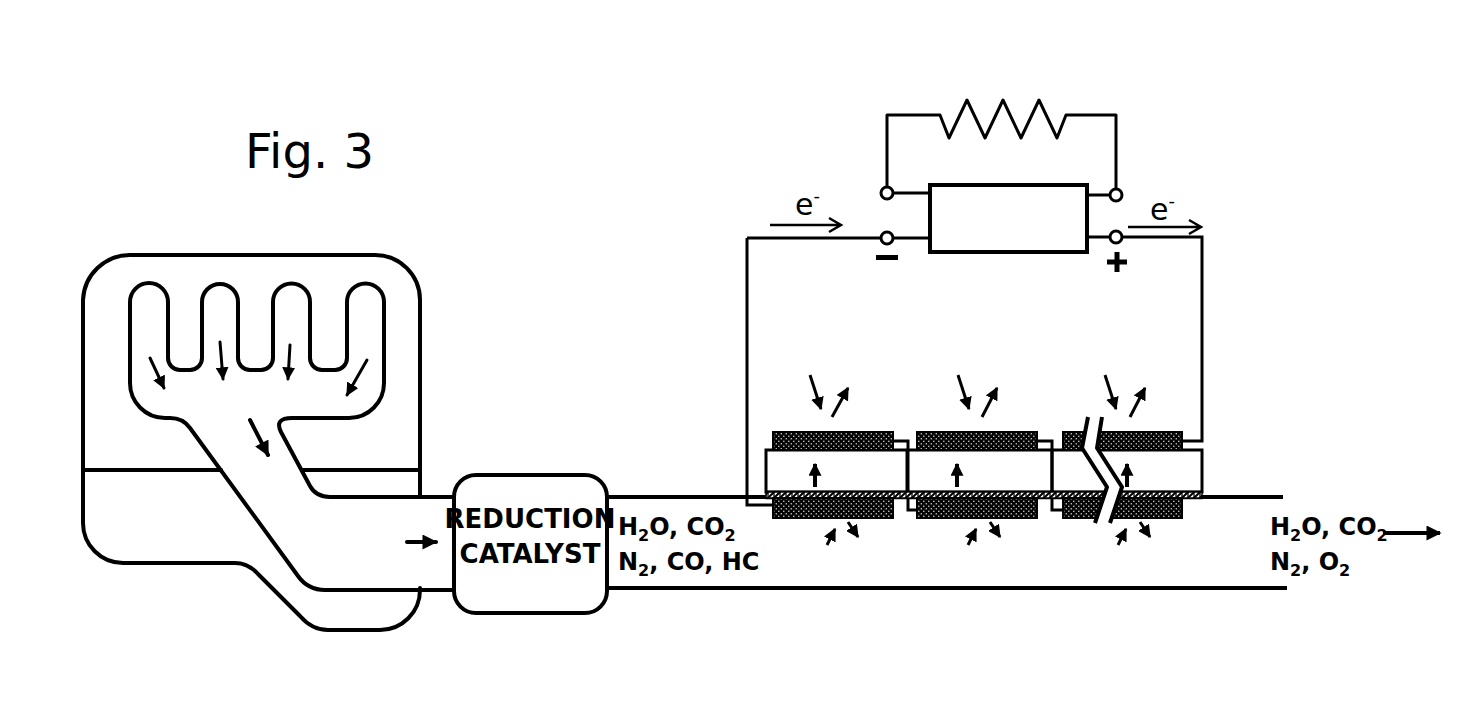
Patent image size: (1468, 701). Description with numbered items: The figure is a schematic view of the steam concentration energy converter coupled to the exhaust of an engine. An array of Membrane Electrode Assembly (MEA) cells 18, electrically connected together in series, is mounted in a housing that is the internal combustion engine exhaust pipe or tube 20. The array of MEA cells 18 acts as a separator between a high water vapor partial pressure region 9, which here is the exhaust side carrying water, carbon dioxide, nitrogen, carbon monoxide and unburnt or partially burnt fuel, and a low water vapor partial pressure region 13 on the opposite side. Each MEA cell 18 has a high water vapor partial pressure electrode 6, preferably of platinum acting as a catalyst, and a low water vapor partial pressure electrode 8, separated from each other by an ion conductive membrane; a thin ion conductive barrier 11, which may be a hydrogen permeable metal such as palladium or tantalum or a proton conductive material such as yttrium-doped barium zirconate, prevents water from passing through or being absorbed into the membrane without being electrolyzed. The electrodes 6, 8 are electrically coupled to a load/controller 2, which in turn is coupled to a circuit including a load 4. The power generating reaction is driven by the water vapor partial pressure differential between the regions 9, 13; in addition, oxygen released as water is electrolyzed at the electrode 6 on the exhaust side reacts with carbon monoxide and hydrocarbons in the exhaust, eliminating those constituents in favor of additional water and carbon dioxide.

The load/controller 2 is at (1043, 253).
The load 4 is at (957, 102).
The high water vapor partial pressure electrode 6 is at (778, 519).
The low water vapor partial pressure electrode 8 is at (777, 432).
The high water vapor partial pressure region 9 is at (777, 548).
The ion conductive barrier 11 is at (1192, 497).
The low water vapor partial pressure region 13 is at (985, 351).
The MEA cells 18 is at (709, 397).
The internal combustion engine exhaust pipe or tube 20 is at (160, 256).